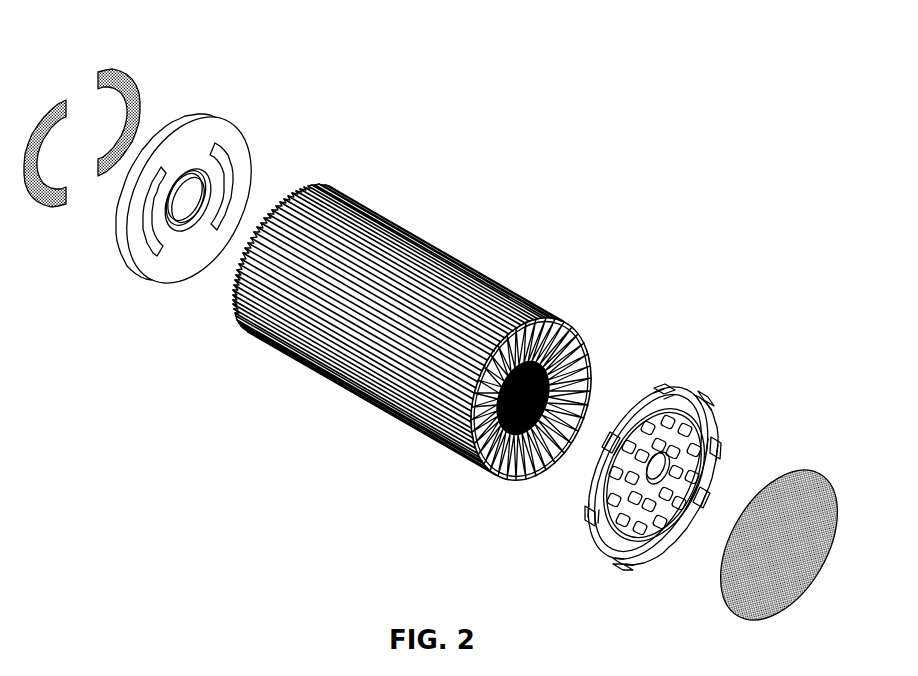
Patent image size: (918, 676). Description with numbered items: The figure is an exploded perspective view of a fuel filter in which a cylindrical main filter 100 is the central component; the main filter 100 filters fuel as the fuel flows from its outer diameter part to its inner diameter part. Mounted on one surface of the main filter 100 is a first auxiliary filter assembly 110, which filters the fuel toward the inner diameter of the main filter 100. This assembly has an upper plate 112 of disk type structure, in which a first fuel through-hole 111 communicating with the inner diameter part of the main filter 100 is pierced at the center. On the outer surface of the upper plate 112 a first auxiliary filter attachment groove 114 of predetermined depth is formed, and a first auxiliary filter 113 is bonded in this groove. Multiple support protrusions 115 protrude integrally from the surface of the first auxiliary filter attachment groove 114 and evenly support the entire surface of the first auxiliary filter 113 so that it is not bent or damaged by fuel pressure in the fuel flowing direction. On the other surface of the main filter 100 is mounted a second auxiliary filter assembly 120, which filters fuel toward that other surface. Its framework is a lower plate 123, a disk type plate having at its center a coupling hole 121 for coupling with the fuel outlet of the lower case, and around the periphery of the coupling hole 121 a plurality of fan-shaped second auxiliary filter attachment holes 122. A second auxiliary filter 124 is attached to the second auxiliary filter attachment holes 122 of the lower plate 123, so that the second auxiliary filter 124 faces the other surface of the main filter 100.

The main filter 100 is at (416, 221).
The first auxiliary filter assembly 110 is at (688, 368).
The first fuel through-hole 111 is at (648, 486).
The upper plate 112 is at (611, 426).
The first auxiliary filter 113 is at (718, 588).
The first auxiliary filter attachment groove 114 is at (617, 476).
The support protrusions 115 is at (638, 432).
The second auxiliary filter assembly 120 is at (114, 36).
The coupling hole 121 is at (201, 194).
The second auxiliary filter attachment holes 122 is at (222, 158).
The lower plate 123 is at (222, 228).
The second auxiliary filter 124 is at (91, 169).